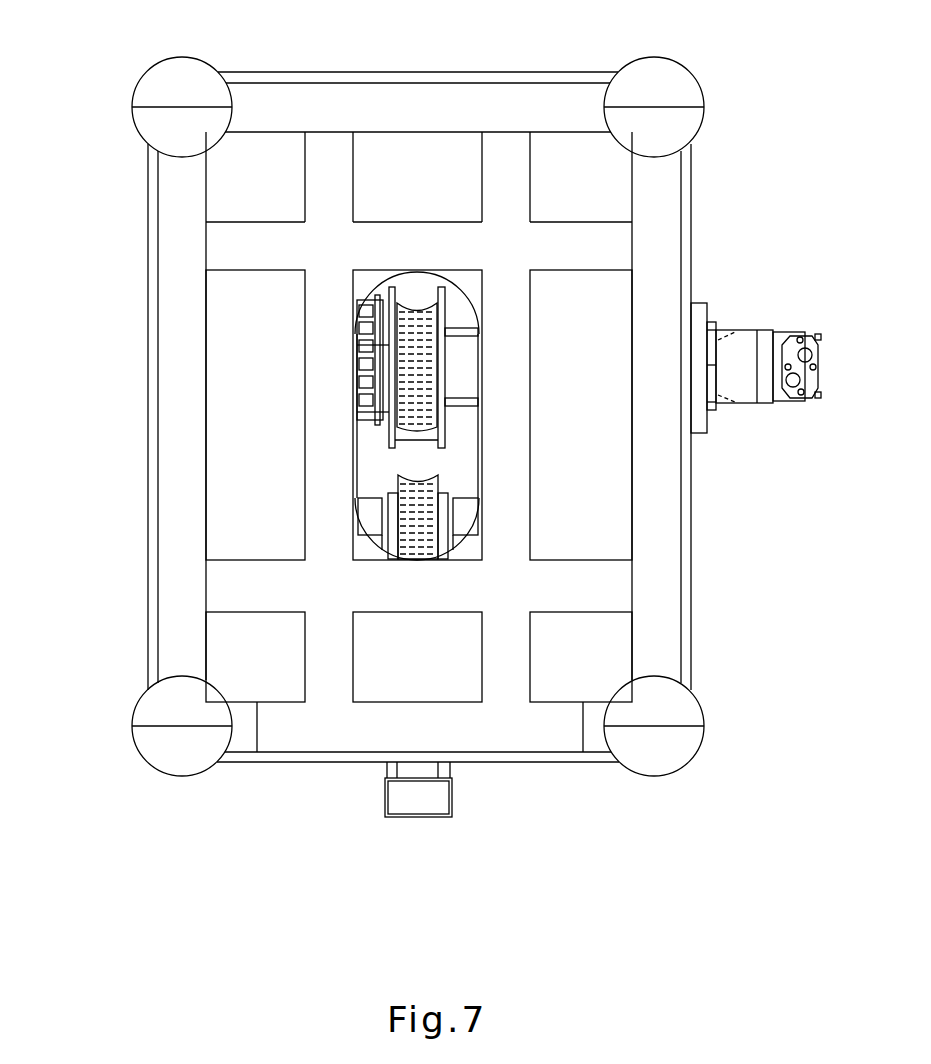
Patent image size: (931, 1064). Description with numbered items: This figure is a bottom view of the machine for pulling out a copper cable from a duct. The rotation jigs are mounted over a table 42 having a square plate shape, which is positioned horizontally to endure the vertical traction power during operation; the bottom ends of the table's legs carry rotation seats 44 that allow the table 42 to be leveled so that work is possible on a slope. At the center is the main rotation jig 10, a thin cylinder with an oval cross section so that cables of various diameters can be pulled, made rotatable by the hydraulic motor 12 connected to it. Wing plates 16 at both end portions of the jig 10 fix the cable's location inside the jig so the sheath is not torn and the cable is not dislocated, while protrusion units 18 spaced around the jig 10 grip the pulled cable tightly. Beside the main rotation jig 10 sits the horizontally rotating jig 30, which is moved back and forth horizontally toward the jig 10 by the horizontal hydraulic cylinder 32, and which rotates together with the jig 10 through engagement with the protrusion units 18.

The main rotation jig 10 is at (372, 440).
The hydraulic motor 12 is at (780, 333).
The wing plate 16 is at (385, 290).
The protrusion unit 18 is at (415, 430).
The horizontally rotating jig 30 is at (378, 480).
The horizontal hydraulic cylinder 32 is at (433, 798).
The table 42 is at (605, 505).
The rotation seat 44 is at (682, 715).